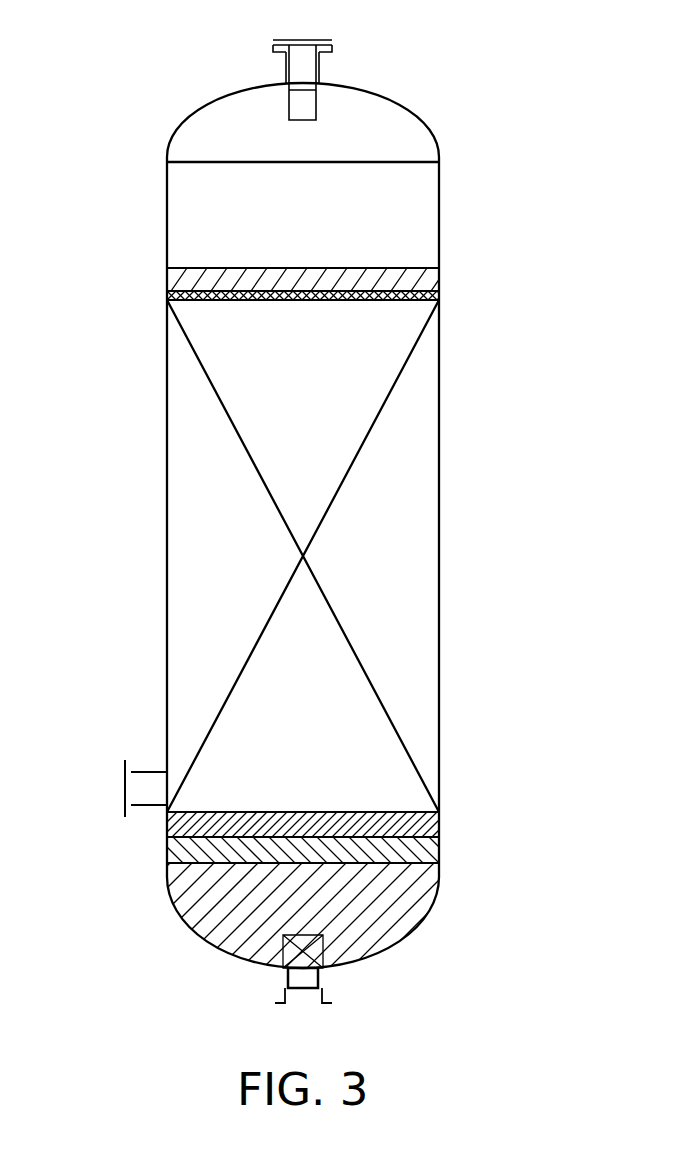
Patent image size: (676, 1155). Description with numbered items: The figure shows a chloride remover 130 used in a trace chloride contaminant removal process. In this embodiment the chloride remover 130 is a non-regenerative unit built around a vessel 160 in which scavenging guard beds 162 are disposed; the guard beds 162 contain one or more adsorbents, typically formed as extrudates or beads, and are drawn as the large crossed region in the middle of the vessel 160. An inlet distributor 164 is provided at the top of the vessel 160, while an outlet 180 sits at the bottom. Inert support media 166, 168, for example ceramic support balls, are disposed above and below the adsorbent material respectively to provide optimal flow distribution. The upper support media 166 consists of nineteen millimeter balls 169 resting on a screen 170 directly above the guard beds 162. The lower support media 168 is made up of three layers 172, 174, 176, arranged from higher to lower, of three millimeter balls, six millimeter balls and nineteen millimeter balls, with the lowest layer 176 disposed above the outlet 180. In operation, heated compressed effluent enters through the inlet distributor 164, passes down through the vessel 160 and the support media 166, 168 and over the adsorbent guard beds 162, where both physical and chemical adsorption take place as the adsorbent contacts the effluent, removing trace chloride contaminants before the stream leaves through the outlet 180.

The chloride remover 130 is at (279, 526).
The vessel 160 is at (167, 224).
The scavenging guard beds 162 is at (430, 412).
The inlet distributor 164 is at (317, 100).
The inert support media 166 is at (297, 271).
The inert support media 168 is at (279, 888).
The balls 169 is at (417, 275).
The screen 170 is at (435, 298).
The layer 172 is at (433, 825).
The layer 174 is at (430, 848).
The layer 176 is at (432, 887).
The outlet 180 is at (317, 955).